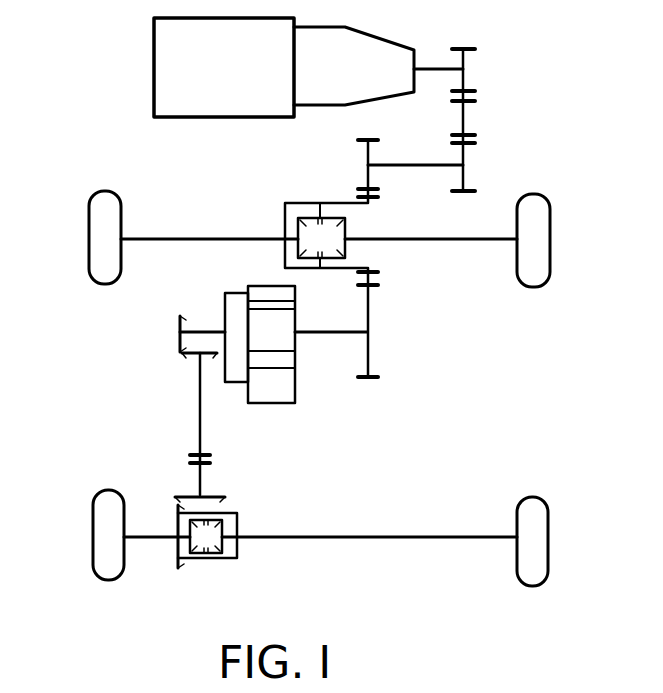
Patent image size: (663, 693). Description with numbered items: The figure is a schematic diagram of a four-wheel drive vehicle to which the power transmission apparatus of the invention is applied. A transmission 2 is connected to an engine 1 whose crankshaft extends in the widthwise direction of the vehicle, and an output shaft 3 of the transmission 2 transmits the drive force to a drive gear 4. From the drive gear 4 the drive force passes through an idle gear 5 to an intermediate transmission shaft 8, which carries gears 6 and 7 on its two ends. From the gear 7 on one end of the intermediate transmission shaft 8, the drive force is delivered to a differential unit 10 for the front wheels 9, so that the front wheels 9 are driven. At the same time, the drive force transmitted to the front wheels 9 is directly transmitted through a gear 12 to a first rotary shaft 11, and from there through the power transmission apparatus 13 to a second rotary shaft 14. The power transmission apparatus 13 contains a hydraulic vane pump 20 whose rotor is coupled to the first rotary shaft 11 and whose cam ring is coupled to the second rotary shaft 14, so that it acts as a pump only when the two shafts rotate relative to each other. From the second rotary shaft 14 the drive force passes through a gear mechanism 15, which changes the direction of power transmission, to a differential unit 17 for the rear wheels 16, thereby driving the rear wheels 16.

The engine 1 is at (226, 30).
The transmission 2 is at (341, 37).
The output shaft 3 is at (430, 65).
The drive gear 4 is at (477, 61).
The idle gear 5 is at (477, 119).
The gear 6 is at (470, 158).
The gear 7 is at (365, 151).
The intermediate transmission shaft 8 is at (376, 167).
The front wheels 9 is at (102, 210).
The differential unit 10 is at (272, 205).
The first rotary shaft 11 is at (332, 335).
The gear 12 is at (369, 313).
The power transmission apparatus 13 is at (296, 408).
The second rotary shaft 14 is at (200, 329).
The gear mechanism 15 is at (170, 338).
The rear wheels 16 is at (103, 512).
The differential unit 17 is at (243, 520).
The vane pump 20 is at (270, 393).